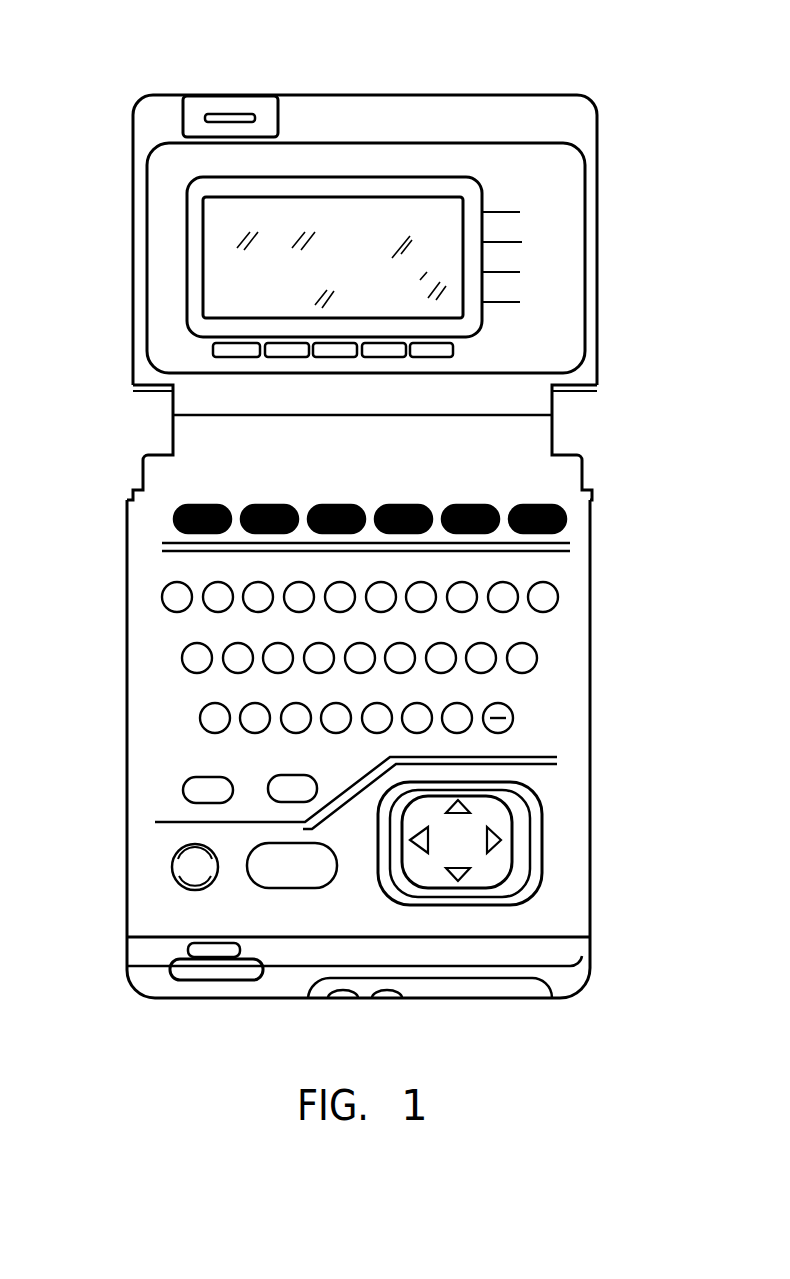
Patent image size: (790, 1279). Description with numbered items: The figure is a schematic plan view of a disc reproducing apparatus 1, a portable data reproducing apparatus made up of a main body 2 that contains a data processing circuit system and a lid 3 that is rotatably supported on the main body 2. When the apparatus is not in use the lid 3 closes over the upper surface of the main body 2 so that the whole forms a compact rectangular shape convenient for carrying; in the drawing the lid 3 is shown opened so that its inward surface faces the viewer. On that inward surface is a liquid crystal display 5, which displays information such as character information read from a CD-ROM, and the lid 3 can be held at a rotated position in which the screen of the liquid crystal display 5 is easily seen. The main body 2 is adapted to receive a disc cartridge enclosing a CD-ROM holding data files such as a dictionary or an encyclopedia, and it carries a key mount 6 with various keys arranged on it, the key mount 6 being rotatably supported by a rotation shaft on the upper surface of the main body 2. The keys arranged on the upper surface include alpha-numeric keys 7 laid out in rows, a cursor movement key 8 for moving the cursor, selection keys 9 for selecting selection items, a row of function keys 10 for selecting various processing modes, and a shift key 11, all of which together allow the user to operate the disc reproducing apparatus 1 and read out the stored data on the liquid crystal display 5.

The disc reproducing apparatus 1 is at (489, 84).
The main body 2 is at (590, 972).
The lid 3 is at (590, 100).
The liquid crystal display 5 is at (465, 206).
The key mount 6 is at (576, 720).
The alpha-numeric keys 7 is at (513, 718).
The cursor movement key 8 is at (494, 823).
The selection keys 9 is at (258, 884).
The function keys 10 is at (576, 524).
The shift key 11 is at (183, 793).